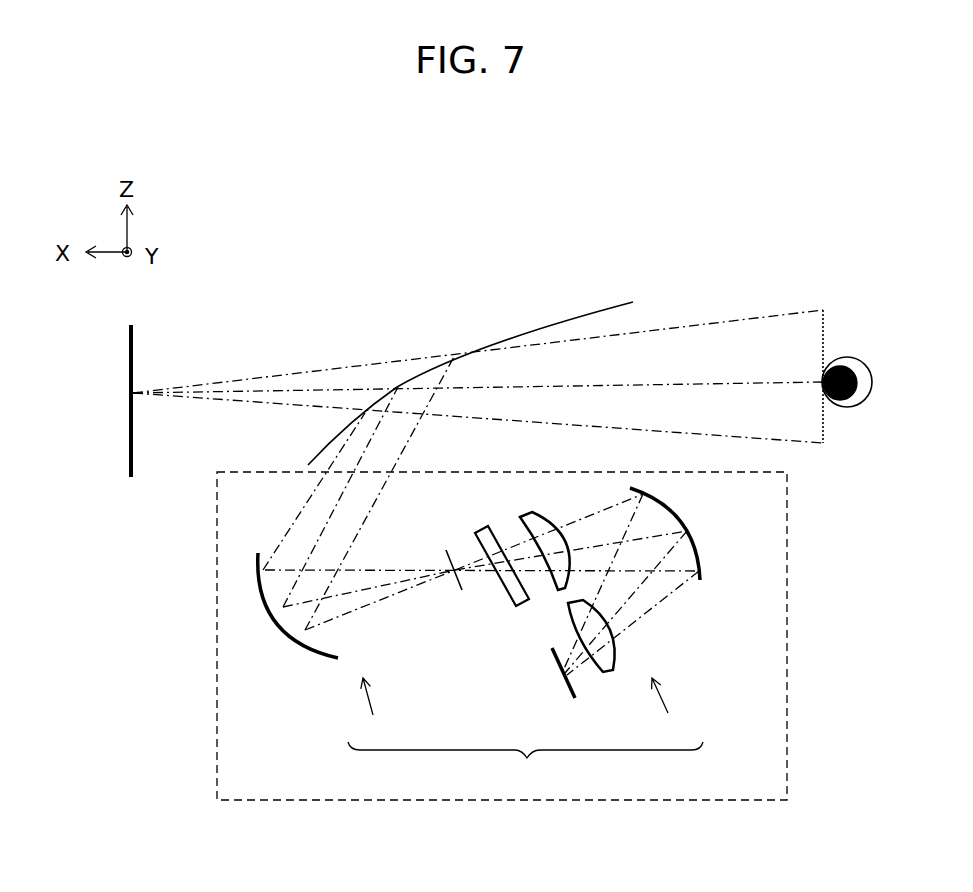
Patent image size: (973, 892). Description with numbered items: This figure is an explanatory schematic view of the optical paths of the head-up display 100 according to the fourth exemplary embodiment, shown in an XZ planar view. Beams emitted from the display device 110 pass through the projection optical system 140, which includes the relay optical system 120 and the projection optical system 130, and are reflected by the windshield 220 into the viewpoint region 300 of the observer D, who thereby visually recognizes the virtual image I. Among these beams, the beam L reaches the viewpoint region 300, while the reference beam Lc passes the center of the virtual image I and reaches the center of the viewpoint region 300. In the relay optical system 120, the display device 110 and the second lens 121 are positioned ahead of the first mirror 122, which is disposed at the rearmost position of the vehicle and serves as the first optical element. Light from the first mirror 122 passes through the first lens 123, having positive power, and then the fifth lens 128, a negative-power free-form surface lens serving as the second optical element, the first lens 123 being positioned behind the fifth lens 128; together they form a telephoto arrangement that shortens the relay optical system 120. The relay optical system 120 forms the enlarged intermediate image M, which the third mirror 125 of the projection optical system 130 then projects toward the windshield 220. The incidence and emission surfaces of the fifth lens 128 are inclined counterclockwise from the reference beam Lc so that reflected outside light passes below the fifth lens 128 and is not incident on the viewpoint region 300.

The head-up display 100 is at (788, 537).
The display device 110 is at (563, 688).
The relay optical system 120 is at (671, 712).
The second lens 121 is at (620, 645).
The first mirror 122 is at (697, 535).
The first lens 123 is at (518, 513).
The third mirror 125 is at (325, 655).
The fifth lens 128 is at (513, 598).
The projection optical system 130 is at (373, 712).
The projection optical system 140 is at (525, 767).
The windshield 220 is at (540, 328).
The viewpoint region 300 is at (823, 335).
The observer D is at (872, 387).
The virtual image I is at (136, 343).
The beam L is at (373, 365).
The reference beam Lc is at (632, 383).
The intermediate image M is at (450, 567).